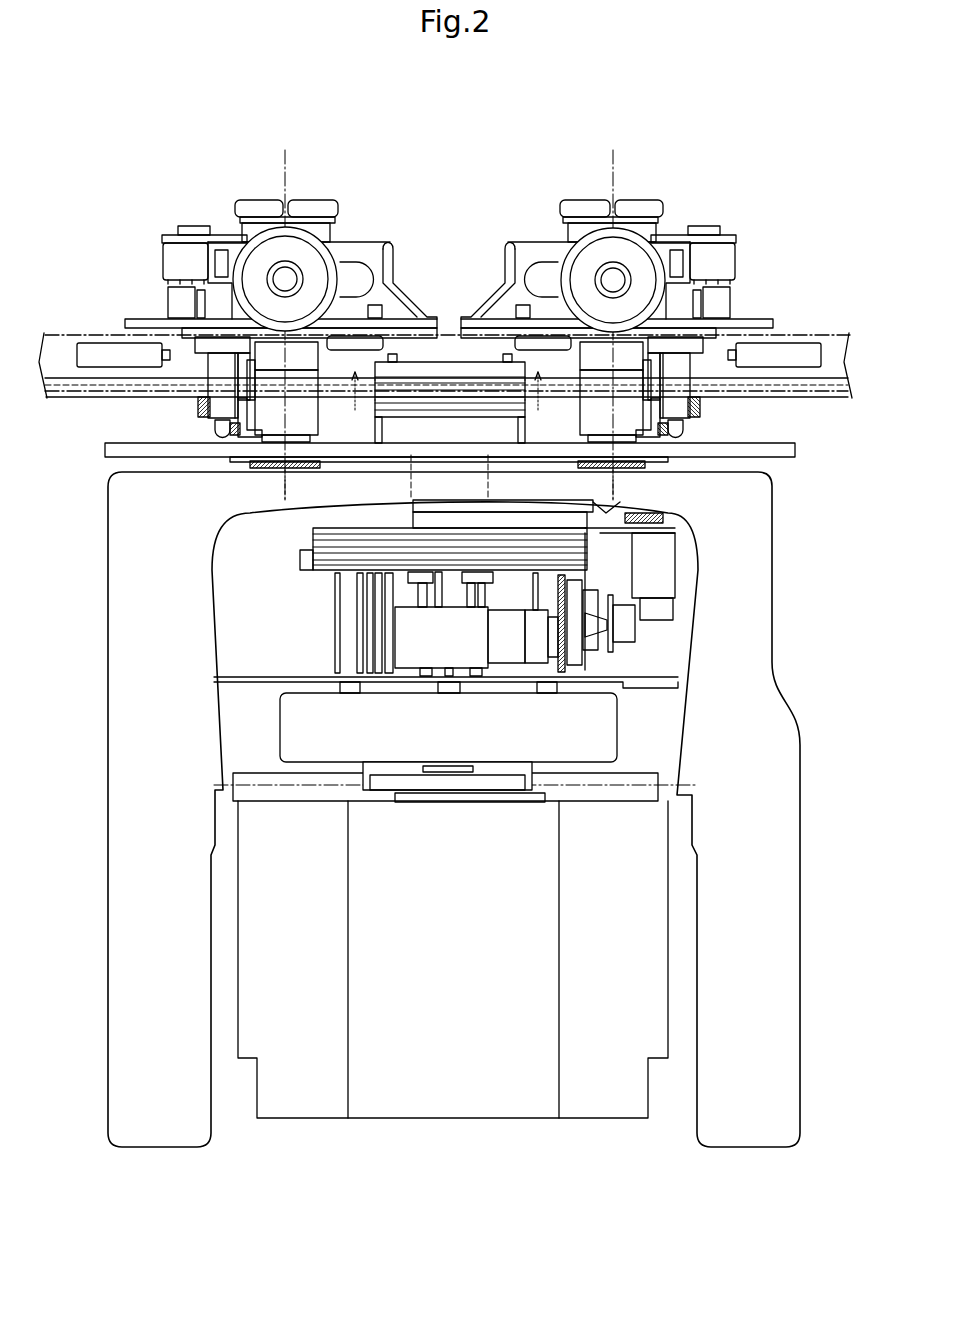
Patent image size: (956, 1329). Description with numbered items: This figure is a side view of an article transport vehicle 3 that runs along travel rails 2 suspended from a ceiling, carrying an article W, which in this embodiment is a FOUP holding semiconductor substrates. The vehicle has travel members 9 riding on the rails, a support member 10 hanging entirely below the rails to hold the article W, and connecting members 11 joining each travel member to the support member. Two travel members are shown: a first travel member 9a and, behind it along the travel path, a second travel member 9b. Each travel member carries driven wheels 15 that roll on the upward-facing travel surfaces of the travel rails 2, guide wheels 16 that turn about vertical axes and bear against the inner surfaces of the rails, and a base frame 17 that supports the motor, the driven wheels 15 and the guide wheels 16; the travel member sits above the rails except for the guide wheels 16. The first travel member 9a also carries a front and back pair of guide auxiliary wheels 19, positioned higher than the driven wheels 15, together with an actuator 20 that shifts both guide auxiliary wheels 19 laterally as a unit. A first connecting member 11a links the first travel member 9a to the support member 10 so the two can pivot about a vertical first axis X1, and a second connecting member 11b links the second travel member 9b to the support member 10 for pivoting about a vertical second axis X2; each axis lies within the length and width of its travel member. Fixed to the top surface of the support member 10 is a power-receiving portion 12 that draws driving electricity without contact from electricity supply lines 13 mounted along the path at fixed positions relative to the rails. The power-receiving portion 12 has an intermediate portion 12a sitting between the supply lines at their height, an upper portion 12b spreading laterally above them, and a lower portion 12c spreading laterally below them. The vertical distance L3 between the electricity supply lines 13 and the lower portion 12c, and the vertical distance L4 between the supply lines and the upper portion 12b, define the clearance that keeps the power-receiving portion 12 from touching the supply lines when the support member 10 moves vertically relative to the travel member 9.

The travel rail 2 is at (64, 342).
The article transport vehicle 3 is at (96, 982).
The travel member 9 is at (476, 300).
The first travel member 9a is at (364, 182).
The second travel member 9b is at (698, 180).
The support member 10 is at (760, 607).
The connecting member 11 is at (450, 424).
The first connecting member 11a is at (270, 417).
The second connecting member 11b is at (632, 425).
The power-receiving portion 12 is at (422, 329).
The intermediate portion 12a is at (448, 372).
The upper portion 12b is at (423, 358).
The lower portion 12c is at (420, 413).
The electricity supply line 13 is at (758, 385).
The driven wheel 15 is at (247, 253).
The guide wheel 16 is at (197, 343).
The base frame 17 is at (397, 330).
The guide auxiliary wheel 19 is at (260, 207).
The actuator 20 is at (168, 260).
The vertical distance L3 is at (353, 394).
The vertical distance L4 is at (541, 394).
The first axis X1 is at (288, 494).
The second axis X2 is at (622, 500).
The article W is at (388, 1110).